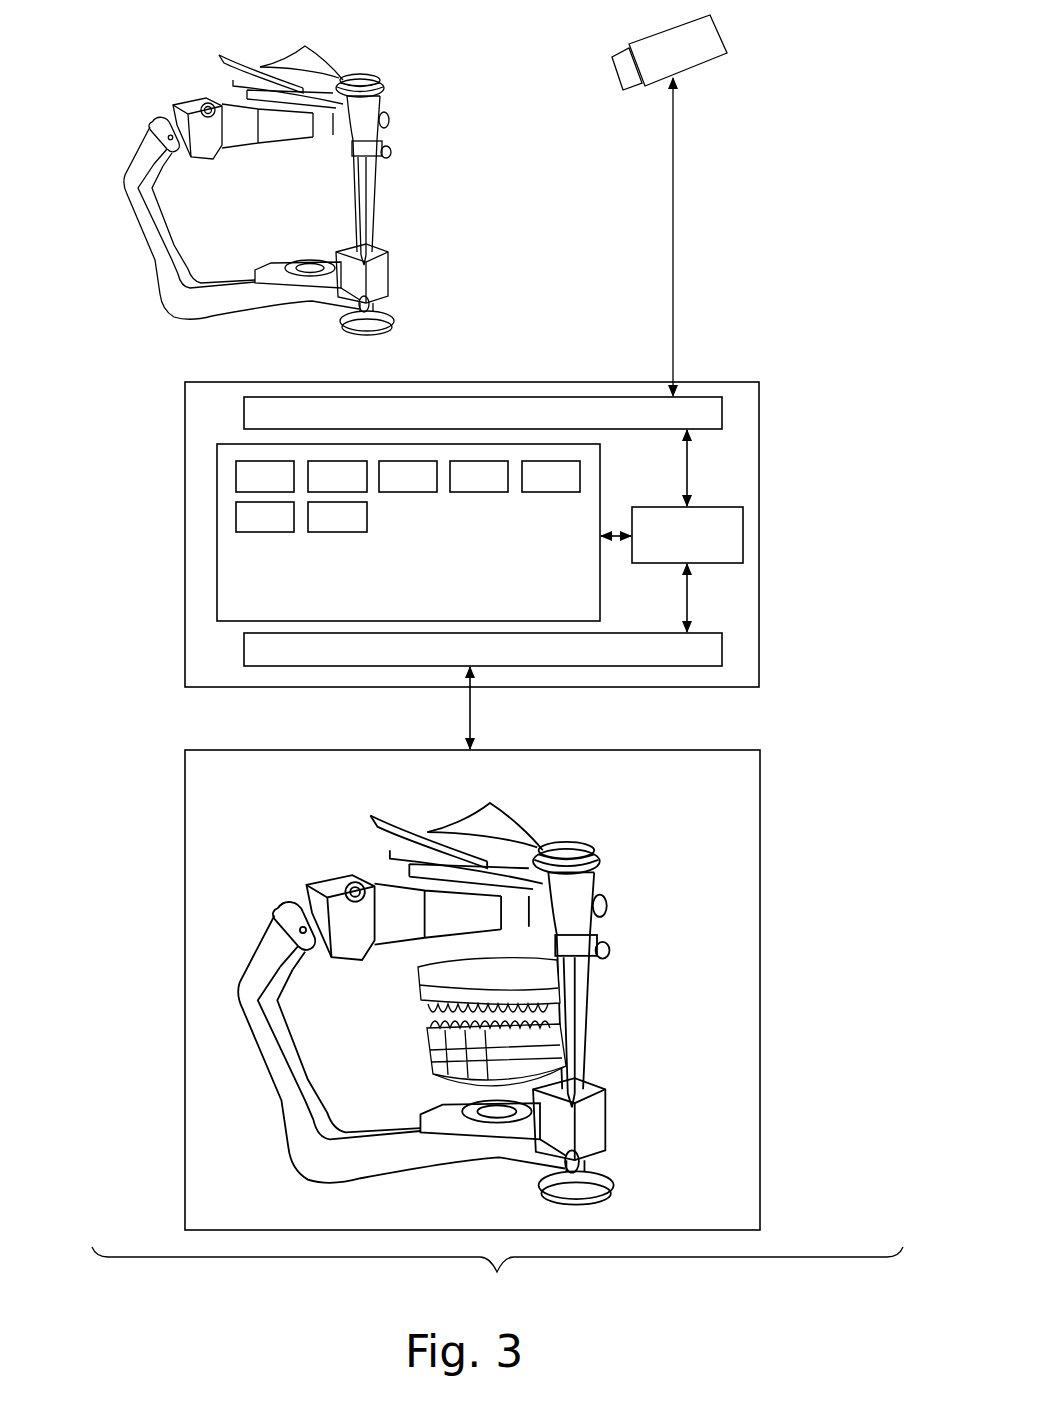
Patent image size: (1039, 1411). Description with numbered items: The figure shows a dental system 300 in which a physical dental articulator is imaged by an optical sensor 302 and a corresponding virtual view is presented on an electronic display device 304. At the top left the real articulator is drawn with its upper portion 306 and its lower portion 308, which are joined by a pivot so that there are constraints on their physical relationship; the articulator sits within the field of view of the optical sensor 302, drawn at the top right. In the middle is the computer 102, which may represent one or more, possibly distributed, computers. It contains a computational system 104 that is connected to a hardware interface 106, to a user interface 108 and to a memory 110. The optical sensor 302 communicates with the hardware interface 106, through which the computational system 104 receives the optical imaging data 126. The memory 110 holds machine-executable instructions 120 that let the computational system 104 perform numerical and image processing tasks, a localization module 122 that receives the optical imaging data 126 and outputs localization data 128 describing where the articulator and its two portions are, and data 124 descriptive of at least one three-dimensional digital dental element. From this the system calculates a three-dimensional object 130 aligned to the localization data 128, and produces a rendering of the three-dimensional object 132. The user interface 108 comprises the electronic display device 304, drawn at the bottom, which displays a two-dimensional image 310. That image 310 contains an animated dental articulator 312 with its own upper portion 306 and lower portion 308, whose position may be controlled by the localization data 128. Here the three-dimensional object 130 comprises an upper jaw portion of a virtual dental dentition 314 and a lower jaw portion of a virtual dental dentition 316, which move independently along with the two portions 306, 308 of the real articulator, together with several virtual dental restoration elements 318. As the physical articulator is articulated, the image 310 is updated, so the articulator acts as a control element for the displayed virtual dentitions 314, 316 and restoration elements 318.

The computer 102 is at (759, 422).
The computational system 104 is at (672, 531).
The hardware interface 106 is at (483, 413).
The user interface 108 is at (483, 649).
The memory 110 is at (215, 548).
The machine-executable instructions 120 is at (265, 476).
The localization module 122 is at (337, 476).
The data descriptive of at least one three-dimensional digital dental element 124 is at (408, 476).
The optical imaging data 126 is at (479, 476).
The localization data 128 is at (551, 476).
The three-dimensional object 130 is at (430, 1190).
The rendering of the three-dimensional object 132 is at (337, 517).
The dental system 300 is at (376, 60).
The optical sensor 302 is at (708, 37).
The electronic display device 304 is at (760, 1170).
The upper portion 306 is at (188, 100).
The lower portion 308 is at (150, 223).
The two-dimensional image 310 is at (715, 817).
The animated dental articulator 312 is at (640, 892).
The upper jaw portion of a virtual dental dentition 314 is at (517, 980).
The lower jaw portion of a virtual dental dentition 316 is at (530, 1073).
The virtual dental restoration elements 318 is at (440, 1077).